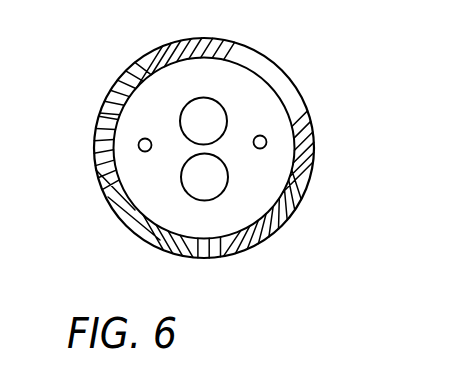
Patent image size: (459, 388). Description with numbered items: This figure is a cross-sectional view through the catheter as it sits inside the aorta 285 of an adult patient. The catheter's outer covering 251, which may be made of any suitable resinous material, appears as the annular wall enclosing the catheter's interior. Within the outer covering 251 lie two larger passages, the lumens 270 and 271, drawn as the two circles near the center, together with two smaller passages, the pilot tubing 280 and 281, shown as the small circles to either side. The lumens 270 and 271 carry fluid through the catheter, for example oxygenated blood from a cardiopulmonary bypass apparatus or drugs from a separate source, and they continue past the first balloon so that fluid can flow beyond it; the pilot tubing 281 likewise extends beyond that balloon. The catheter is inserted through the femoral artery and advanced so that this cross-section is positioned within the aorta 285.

The outer covering 251 is at (213, 82).
The lumen 270 is at (217, 187).
The lumen 271 is at (220, 117).
The pilot tubing 280 is at (267, 140).
The pilot tubing 281 is at (138, 143).
The aorta 285 is at (308, 185).